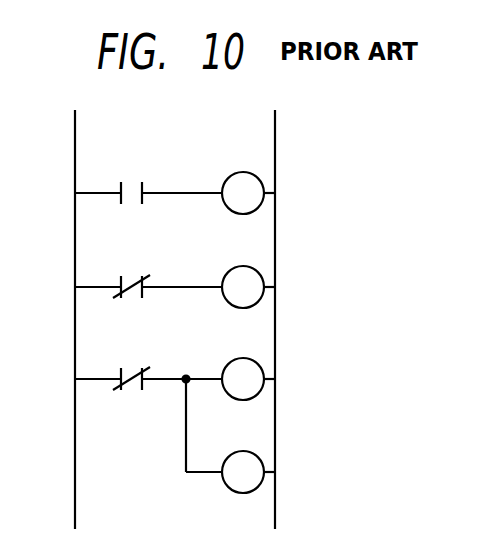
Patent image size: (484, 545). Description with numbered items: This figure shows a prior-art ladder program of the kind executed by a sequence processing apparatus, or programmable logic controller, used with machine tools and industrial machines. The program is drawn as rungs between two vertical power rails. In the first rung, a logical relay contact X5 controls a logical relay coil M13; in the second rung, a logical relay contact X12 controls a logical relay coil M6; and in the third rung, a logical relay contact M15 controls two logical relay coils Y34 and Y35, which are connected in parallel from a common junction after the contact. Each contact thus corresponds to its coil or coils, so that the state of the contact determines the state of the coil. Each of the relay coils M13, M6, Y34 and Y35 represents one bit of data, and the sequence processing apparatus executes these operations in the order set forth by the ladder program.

The logical relay contact X5 is at (148, 175).
The logical relay coil M13 is at (247, 180).
The logical relay contact X12 is at (148, 267).
The logical relay coil M6 is at (248, 272).
The logical relay contact M15 is at (148, 401).
The logical relay coil Y34 is at (248, 365).
The logical relay coil Y35 is at (230, 459).